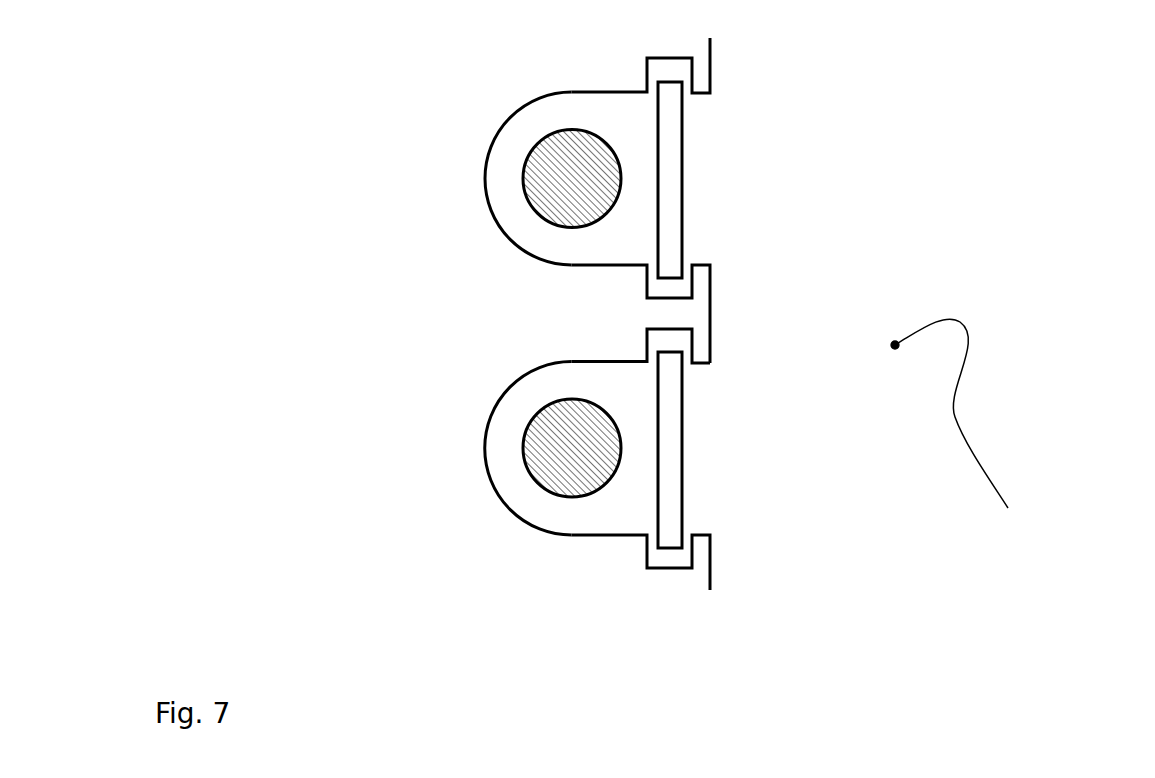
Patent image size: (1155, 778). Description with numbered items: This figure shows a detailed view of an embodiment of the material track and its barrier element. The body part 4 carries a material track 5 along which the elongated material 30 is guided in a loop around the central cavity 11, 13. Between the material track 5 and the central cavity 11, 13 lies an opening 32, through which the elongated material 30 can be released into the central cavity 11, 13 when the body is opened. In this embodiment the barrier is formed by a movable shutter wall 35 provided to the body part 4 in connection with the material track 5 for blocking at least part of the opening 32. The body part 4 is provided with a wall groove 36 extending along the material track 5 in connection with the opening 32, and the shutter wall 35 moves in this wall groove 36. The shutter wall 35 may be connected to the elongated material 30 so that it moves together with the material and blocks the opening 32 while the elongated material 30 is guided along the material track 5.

The second body part 4 is at (551, 596).
The material track 5 is at (485, 187).
The central cavity 11 is at (1001, 424).
The central cavity 13 is at (1001, 424).
The elongated material 30 is at (568, 150).
The opening 32 is at (643, 137).
The shutter wall 35 is at (675, 440).
The wall groove 36 is at (678, 558).